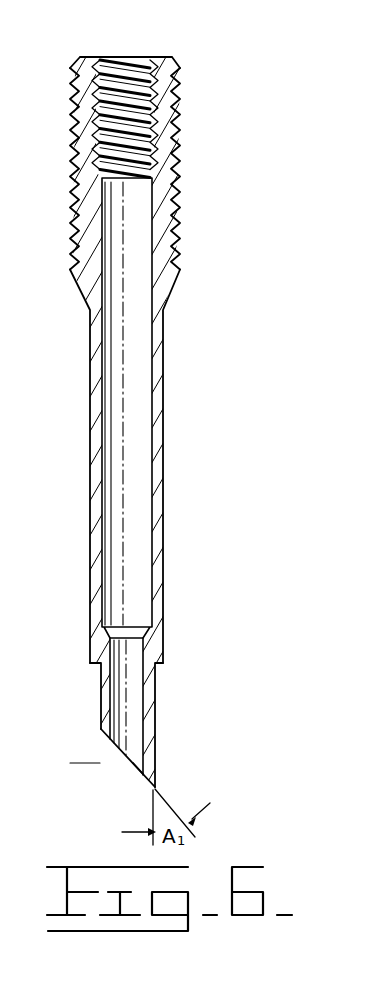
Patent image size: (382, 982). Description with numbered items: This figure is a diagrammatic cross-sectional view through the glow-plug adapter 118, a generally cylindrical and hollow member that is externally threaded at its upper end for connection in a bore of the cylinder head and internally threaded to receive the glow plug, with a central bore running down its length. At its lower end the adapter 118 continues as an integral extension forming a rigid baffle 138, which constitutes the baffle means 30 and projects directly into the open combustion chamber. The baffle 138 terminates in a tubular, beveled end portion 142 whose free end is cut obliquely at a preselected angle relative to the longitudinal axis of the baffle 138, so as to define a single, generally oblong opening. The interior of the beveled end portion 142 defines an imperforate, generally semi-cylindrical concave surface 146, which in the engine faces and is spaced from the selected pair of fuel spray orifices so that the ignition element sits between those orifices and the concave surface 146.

The adapter 118 is at (153, 460).
The baffle 138 is at (160, 703).
The beveled end portion 142 is at (113, 742).
The concave surface 146 is at (141, 755).
The baffle means 30 is at (100, 763).